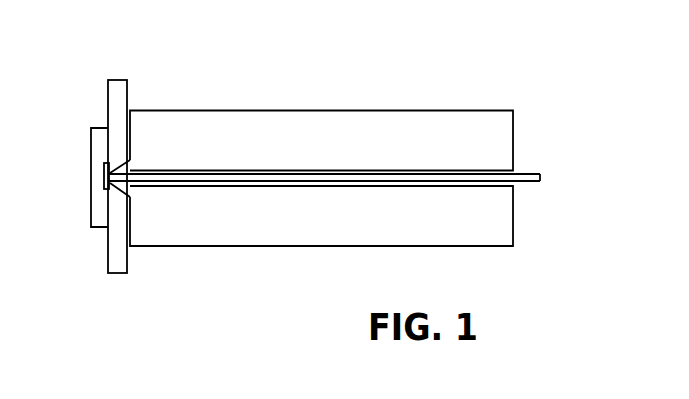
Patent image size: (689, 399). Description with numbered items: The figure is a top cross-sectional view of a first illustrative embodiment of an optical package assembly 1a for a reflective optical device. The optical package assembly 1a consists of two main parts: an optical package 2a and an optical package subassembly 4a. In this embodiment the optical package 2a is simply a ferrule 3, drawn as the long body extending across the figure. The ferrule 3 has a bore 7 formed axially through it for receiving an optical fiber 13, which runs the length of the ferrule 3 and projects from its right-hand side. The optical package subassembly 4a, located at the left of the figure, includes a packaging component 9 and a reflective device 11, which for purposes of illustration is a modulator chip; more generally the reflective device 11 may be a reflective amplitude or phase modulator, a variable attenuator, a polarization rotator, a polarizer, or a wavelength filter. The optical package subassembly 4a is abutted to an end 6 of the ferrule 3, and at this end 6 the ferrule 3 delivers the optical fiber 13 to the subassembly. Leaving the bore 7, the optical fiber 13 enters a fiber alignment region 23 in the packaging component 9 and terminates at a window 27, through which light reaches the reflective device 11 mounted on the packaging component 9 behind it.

The optical package assembly 1a is at (78, 54).
The end of the ferrule 6 is at (142, 96).
The reflective device 11 is at (96, 213).
The ferrule 3 is at (300, 122).
The fiber alignment region 23 is at (122, 171).
The window 27 is at (111, 185).
The bore 7 is at (353, 185).
The optical fiber 13 is at (530, 173).
The packaging component 9 is at (120, 267).
The optical package subassembly 4a is at (135, 320).
The optical package 2a is at (269, 280).